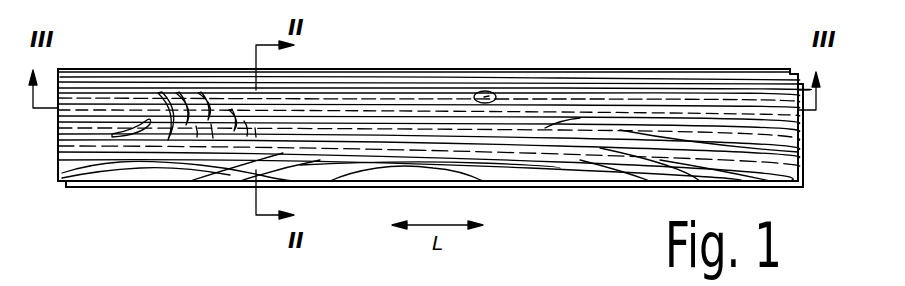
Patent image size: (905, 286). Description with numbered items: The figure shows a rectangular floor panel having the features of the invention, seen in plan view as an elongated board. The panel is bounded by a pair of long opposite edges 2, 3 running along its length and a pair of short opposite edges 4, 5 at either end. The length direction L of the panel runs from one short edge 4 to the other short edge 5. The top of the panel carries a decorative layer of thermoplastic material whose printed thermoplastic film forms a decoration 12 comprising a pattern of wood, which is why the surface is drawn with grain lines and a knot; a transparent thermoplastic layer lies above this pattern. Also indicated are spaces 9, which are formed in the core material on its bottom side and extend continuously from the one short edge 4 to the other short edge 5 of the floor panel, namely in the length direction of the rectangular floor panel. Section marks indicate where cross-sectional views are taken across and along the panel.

The long edge 2 is at (147, 201).
The long edge 3 is at (392, 64).
The short edge 4 is at (808, 154).
The short edge 5 is at (51, 136).
The spaces 9 is at (150, 97).
The decoration 12 is at (432, 105).